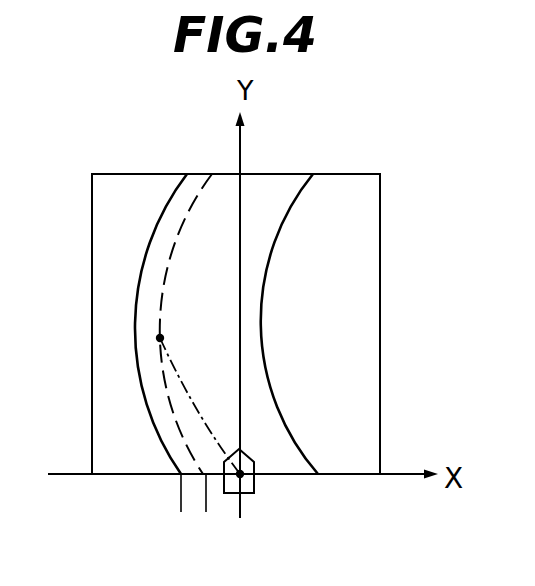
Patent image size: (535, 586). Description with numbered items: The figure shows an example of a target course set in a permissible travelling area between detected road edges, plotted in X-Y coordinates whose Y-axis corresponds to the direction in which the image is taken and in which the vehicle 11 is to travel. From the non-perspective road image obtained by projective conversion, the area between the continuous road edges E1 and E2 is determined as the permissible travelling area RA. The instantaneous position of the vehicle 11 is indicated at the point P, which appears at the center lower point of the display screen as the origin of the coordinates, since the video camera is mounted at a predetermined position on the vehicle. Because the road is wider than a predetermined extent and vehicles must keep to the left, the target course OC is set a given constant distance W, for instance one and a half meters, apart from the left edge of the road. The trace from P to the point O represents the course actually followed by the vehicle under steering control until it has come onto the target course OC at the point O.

The vehicle 11 is at (247, 493).
The permissible travelling area RA is at (272, 200).
The road edge E1 is at (151, 237).
The road edge E2 is at (277, 237).
The target course OC is at (163, 288).
The point on target course O is at (158, 339).
The position of vehicle P is at (254, 485).
The constant distance W is at (230, 503).